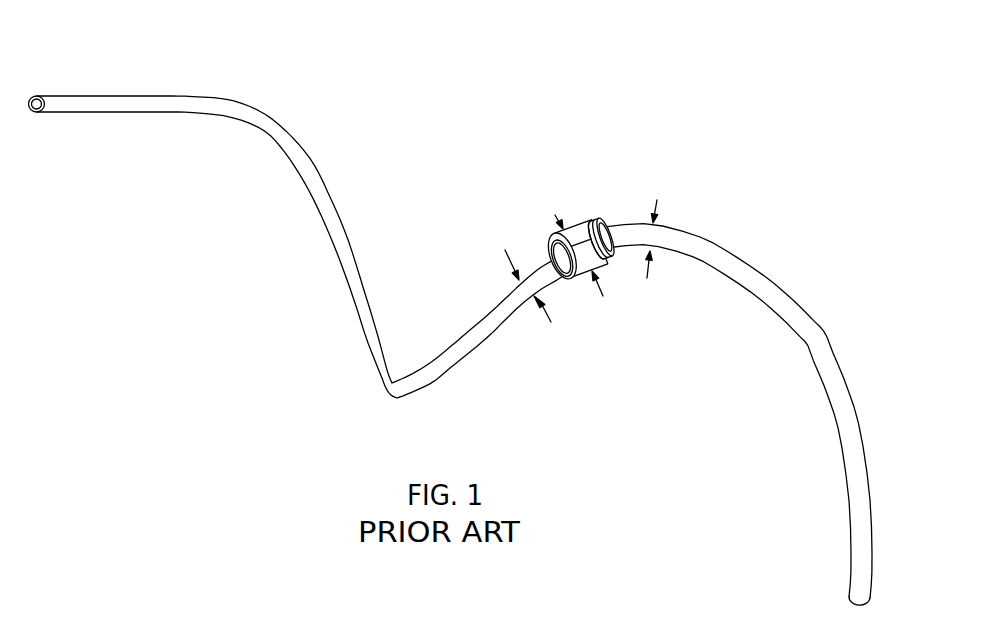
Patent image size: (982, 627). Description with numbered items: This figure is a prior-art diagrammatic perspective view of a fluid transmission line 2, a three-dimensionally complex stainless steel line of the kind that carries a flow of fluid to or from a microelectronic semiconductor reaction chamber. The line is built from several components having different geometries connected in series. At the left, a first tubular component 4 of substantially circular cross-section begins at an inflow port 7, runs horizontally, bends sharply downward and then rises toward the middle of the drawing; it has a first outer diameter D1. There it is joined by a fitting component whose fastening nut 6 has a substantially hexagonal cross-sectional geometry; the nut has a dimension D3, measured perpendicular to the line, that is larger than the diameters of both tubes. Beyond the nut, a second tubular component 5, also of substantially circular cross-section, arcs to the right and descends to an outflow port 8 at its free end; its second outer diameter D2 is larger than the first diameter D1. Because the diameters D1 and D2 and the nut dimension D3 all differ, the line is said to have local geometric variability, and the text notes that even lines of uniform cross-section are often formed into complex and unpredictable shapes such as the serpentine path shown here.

The transmission line 2 is at (810, 161).
The first tubular component 4 is at (297, 223).
The second tubular component 5 is at (738, 415).
The fastening nut 6 is at (584, 226).
The inflow port 7 is at (39, 100).
The outflow port 8 is at (848, 596).
The first outer diameter D1 is at (505, 250).
The second outer diameter D2 is at (657, 200).
The dimension of the fastening nut D3 is at (555, 215).